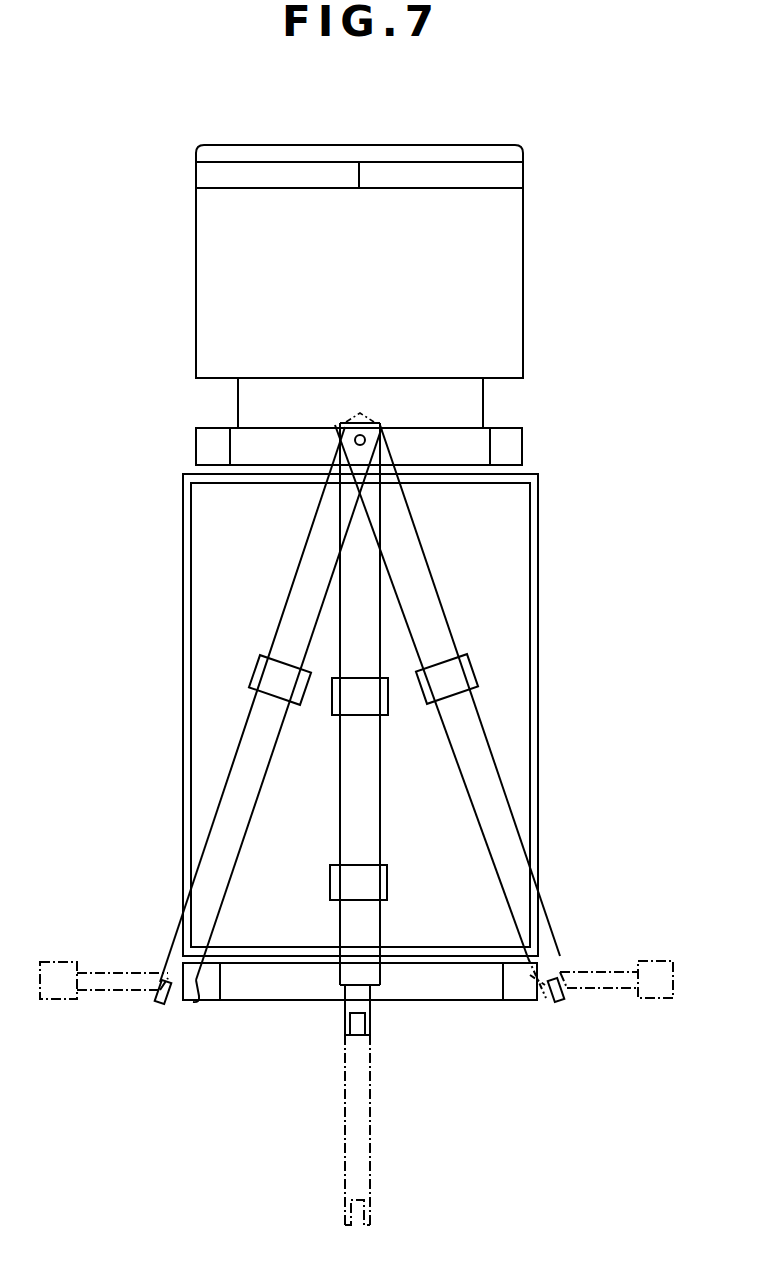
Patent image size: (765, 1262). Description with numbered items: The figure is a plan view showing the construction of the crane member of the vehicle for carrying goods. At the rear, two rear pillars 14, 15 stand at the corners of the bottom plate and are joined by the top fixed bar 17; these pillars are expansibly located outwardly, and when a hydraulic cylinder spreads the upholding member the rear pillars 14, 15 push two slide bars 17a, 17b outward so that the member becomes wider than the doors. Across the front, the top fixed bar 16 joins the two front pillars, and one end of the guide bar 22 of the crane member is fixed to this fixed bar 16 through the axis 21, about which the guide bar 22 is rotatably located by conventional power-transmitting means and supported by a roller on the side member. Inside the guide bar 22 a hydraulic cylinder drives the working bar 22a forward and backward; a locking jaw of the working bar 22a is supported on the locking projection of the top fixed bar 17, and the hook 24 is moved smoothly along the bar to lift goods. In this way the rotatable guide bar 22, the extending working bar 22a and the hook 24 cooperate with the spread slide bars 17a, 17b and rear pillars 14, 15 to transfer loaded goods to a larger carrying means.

The rear pillar 14 is at (202, 992).
The rear pillar 15 is at (527, 990).
The top fixed bar 16 is at (480, 440).
The top fixed bar 17 is at (448, 992).
The slide bar 17a is at (100, 985).
The slide bar 17b is at (612, 977).
The axis 21 is at (357, 437).
The guide bar 22 is at (372, 636).
The working bar 22a is at (350, 1003).
The hook 24 is at (377, 702).